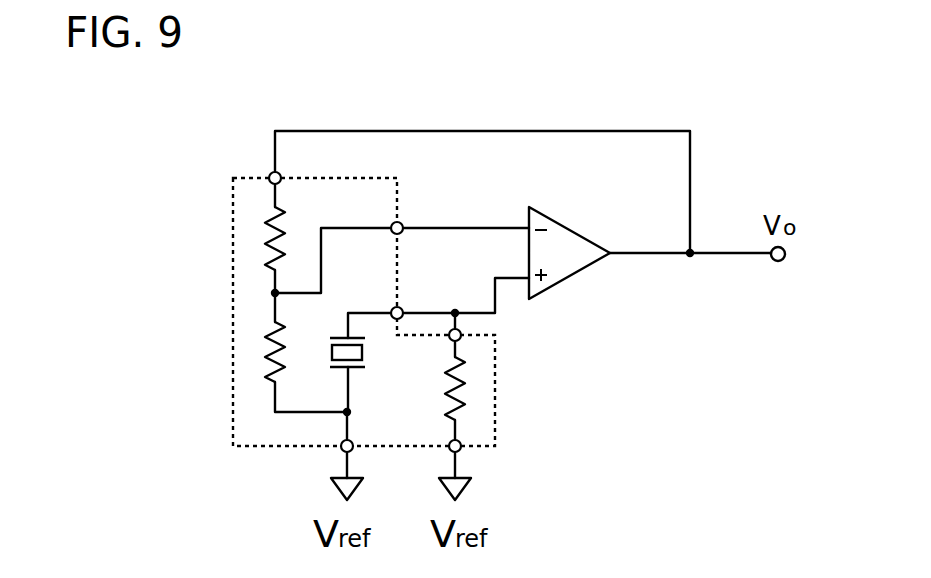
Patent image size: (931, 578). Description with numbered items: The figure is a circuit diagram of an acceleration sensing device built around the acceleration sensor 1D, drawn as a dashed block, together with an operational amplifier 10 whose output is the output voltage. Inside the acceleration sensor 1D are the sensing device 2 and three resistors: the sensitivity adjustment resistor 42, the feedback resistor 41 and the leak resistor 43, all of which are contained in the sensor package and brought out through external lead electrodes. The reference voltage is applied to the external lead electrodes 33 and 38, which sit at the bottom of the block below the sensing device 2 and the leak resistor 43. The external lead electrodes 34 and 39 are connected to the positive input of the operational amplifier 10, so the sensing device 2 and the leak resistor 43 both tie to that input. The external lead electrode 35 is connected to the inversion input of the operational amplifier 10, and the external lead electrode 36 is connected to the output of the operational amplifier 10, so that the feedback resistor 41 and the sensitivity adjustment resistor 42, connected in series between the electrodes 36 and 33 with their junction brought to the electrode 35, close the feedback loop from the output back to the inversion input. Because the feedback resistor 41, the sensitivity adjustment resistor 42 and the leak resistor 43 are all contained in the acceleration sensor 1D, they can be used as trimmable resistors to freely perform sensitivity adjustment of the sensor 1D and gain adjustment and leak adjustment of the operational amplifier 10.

The acceleration sensor 1D is at (233, 320).
The sensing device 2 is at (364, 350).
The operational amplifier 10 is at (566, 279).
The external lead electrode 33 is at (352, 450).
The external lead electrode 34 is at (403, 309).
The external lead electrode 35 is at (402, 223).
The external lead electrode 36 is at (270, 174).
The external lead electrode 38 is at (462, 451).
The external lead electrode 39 is at (461, 333).
The feedback resistor 41 is at (265, 243).
The sensitivity adjustment resistor 42 is at (265, 357).
The leak resistor 43 is at (468, 380).